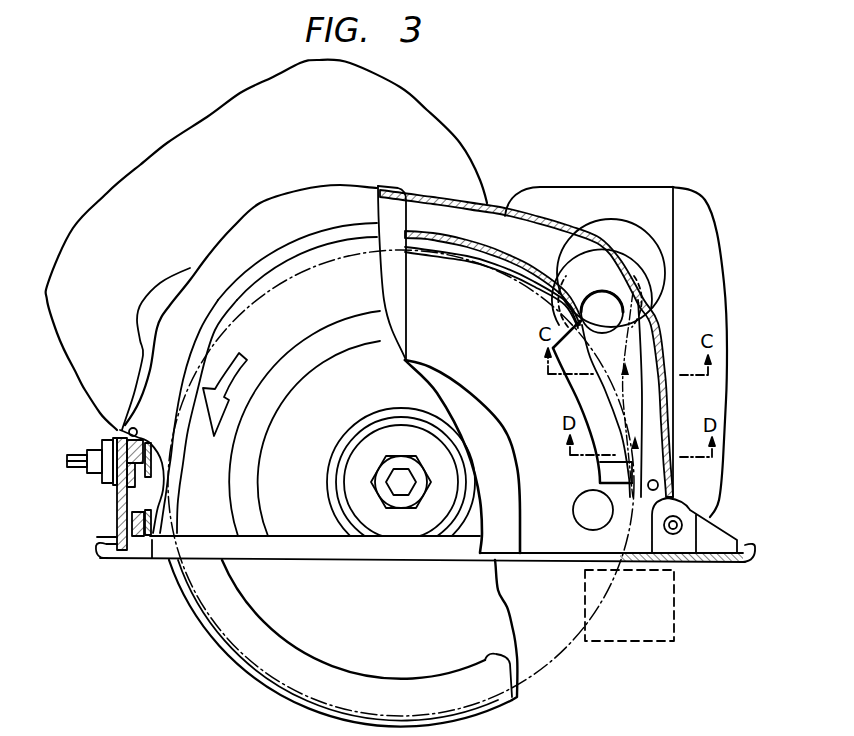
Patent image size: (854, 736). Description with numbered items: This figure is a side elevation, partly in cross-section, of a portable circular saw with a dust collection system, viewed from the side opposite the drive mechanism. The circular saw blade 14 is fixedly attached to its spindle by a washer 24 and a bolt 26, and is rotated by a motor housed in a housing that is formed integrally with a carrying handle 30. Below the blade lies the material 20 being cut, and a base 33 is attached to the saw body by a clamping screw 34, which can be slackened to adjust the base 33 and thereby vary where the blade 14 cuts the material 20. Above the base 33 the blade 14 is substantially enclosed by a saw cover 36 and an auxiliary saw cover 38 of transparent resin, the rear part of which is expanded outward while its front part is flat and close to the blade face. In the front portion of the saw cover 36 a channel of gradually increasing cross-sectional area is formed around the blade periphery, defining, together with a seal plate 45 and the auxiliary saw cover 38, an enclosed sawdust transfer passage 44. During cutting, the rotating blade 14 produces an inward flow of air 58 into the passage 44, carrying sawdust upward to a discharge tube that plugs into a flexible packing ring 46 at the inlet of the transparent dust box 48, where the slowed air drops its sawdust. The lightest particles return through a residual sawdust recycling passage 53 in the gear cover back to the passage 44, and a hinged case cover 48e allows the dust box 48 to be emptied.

The circular saw blade 14 is at (548, 678).
The material 20 is at (620, 641).
The washer 24 is at (368, 518).
The bolt 26 is at (405, 490).
The carrying handle 30 is at (165, 143).
The base 33 is at (248, 553).
The clamping screw 34 is at (72, 450).
The saw cover 36 is at (120, 495).
The auxiliary saw cover 38 is at (187, 433).
The sawdust transfer passage 44 is at (565, 277).
The seal plate 45 is at (483, 283).
The packing ring 46 is at (615, 232).
The dust box 48 is at (582, 197).
The case cover 48e is at (704, 213).
The residual sawdust recycling passage 53 is at (588, 510).
The inward flow of air 58 is at (632, 463).